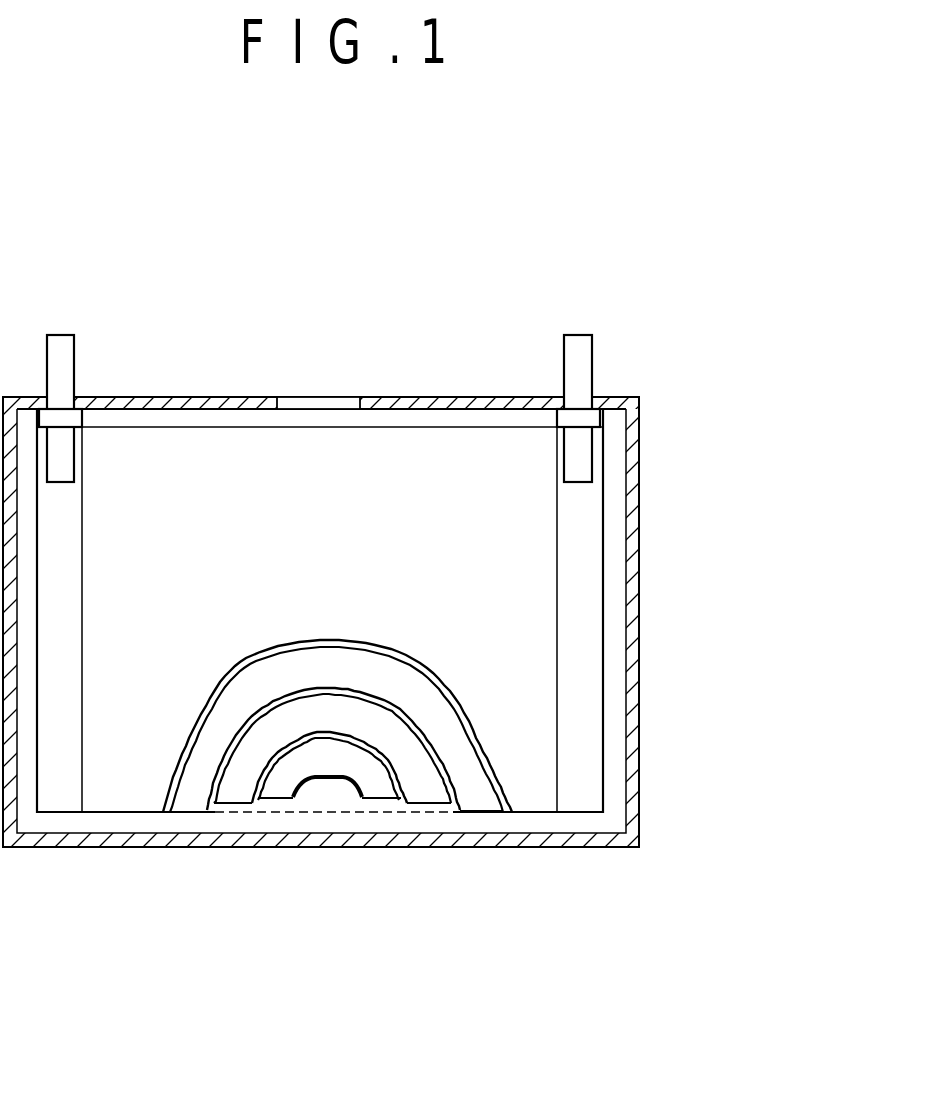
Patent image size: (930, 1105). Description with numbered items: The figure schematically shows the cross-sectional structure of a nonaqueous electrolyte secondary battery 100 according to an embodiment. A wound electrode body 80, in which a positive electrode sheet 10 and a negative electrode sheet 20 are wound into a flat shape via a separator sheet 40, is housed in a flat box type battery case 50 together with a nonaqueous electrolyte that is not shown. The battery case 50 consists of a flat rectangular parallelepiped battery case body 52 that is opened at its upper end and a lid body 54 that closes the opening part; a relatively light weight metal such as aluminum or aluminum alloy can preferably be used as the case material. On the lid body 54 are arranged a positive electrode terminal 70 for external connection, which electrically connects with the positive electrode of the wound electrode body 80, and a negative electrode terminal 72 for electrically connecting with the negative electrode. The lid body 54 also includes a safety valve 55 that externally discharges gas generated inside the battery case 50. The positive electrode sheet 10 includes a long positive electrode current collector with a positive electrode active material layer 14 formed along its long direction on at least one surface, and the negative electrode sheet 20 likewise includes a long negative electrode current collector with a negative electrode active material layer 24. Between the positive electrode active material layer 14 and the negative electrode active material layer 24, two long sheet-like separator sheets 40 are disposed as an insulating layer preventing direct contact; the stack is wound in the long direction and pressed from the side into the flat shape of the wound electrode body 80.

The nonaqueous electrolyte secondary battery 100 is at (639, 235).
The positive electrode sheet 10 is at (188, 792).
The positive electrode active material layer 14 is at (318, 892).
The negative electrode sheet 20 is at (281, 795).
The negative electrode active material layer 24 is at (294, 881).
The separator sheet 40 is at (118, 787).
The battery case 50 is at (657, 623).
The battery case body 52 is at (633, 782).
The lid body 54 is at (462, 405).
The safety valve 55 is at (311, 401).
The positive electrode terminal 70 is at (58, 345).
The negative electrode terminal 72 is at (573, 353).
The wound electrode body 80 is at (540, 824).